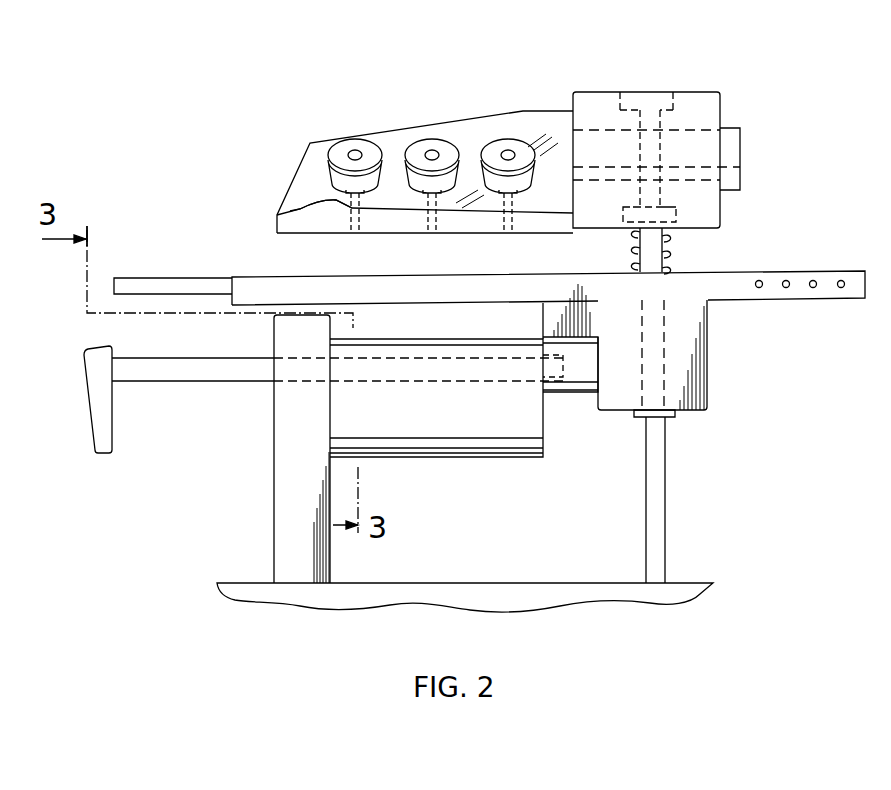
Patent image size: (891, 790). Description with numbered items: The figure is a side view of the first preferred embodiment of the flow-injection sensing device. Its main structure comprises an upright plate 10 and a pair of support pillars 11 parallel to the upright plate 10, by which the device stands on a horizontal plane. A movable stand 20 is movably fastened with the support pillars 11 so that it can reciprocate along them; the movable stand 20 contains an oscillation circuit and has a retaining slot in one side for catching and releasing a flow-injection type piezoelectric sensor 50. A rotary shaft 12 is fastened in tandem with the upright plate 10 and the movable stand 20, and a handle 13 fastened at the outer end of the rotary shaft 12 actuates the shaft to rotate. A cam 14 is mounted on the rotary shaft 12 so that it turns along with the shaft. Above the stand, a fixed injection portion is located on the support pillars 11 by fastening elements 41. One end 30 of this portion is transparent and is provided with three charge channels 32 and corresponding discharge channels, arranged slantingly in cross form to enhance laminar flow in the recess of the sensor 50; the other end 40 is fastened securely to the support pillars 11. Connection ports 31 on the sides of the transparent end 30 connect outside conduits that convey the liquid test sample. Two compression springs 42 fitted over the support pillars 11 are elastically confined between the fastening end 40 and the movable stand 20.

The upright plate 10 is at (288, 508).
The support pillars 11 is at (668, 490).
The rotary shaft 12 is at (196, 373).
The handle 13 is at (107, 430).
The cam 14 is at (483, 430).
The movable stand 20 is at (258, 286).
The transparent end 30 is at (462, 130).
The connection port 31 is at (432, 152).
The charge channels 32 is at (296, 210).
The fastening end 40 is at (690, 102).
The fastening elements 41 is at (632, 100).
The compression springs 42 is at (674, 254).
The flow-injection type piezoelectric sensor 50 is at (185, 286).